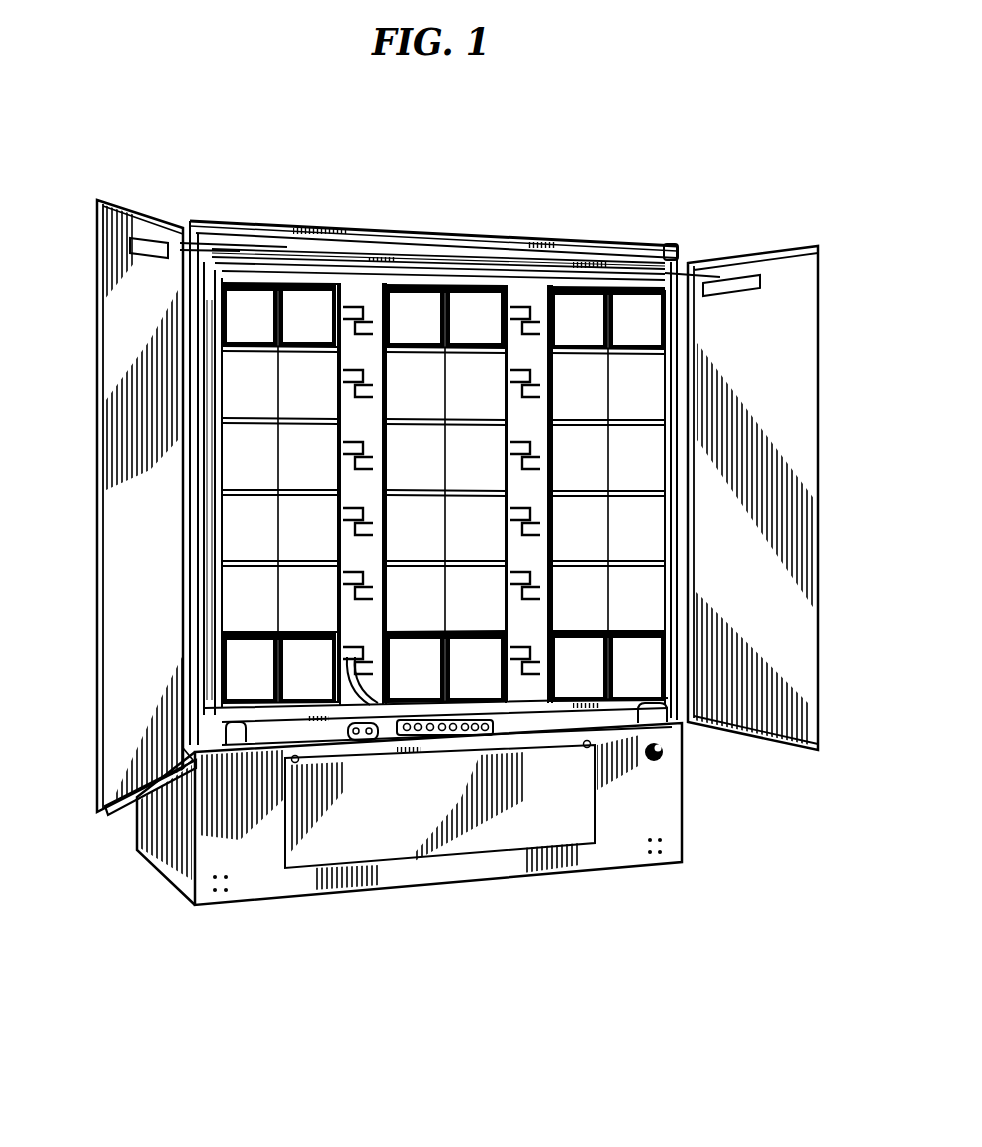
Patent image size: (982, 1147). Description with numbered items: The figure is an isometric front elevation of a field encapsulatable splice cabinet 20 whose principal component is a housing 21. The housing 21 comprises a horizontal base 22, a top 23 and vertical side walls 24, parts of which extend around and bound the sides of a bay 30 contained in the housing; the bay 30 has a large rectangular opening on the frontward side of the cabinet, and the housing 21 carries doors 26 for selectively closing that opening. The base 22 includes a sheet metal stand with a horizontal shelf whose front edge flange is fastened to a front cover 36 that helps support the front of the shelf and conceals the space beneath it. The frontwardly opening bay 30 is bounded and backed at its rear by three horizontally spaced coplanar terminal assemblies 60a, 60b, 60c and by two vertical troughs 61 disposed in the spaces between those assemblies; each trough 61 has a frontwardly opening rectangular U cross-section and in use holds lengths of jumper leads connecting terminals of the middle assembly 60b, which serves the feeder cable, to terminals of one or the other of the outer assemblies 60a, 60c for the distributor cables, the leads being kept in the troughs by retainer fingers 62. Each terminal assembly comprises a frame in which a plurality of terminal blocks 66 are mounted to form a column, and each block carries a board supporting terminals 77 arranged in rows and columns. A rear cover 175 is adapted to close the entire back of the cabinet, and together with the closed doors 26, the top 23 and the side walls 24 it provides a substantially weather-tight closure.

The field encapsulatable splice cabinet 20 is at (749, 836).
The housing 21 is at (875, 433).
The horizontal base 22 is at (258, 892).
The top 23 is at (368, 233).
The vertical side walls 24 is at (216, 503).
The doors 26 is at (120, 568).
The bay 30 is at (443, 493).
The front cover 36 is at (676, 764).
The terminal assembly 60a is at (567, 382).
The terminal assembly 60b is at (405, 382).
The terminal assembly 60c is at (243, 382).
The vertical troughs 61 is at (352, 290).
The retainer fingers 62 is at (378, 690).
The terminal blocks 66 is at (633, 330).
The terminals 77 is at (307, 272).
The rear cover 175 is at (136, 818).